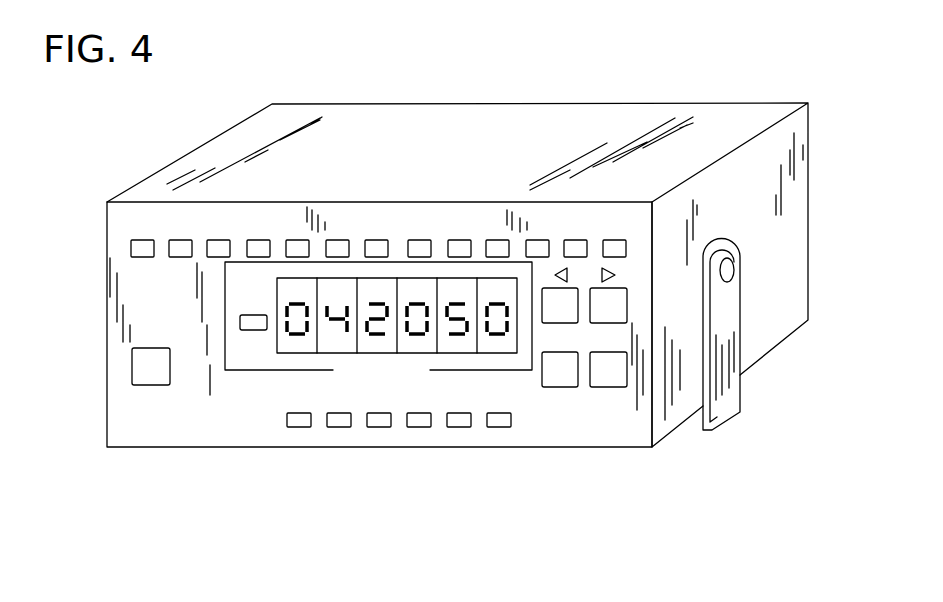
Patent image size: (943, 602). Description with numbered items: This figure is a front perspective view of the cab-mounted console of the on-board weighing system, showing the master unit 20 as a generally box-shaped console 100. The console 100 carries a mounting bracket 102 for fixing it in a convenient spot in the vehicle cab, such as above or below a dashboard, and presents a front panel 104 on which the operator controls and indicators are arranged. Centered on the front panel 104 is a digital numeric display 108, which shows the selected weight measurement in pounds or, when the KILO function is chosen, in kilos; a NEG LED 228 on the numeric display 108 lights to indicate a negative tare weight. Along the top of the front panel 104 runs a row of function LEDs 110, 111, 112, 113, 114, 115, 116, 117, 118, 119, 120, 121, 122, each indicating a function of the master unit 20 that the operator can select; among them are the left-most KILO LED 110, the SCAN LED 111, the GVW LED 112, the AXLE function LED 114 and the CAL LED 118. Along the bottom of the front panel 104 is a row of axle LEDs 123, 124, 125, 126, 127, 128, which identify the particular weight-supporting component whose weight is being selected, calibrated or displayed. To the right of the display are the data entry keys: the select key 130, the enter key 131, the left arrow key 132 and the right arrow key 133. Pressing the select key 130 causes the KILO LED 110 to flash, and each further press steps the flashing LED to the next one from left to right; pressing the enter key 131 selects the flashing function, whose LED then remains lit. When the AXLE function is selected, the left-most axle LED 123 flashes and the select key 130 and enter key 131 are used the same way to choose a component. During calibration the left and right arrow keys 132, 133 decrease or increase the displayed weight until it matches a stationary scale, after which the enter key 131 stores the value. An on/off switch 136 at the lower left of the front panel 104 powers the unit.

The master unit 20 is at (74, 293).
The console 100 is at (767, 358).
The mounting bracket 102 is at (727, 417).
The front panel 104 is at (157, 447).
The digital numeric display 108 is at (225, 370).
The KILO LED 110 is at (131, 246).
The SCAN LED 111 is at (178, 239).
The GVW LED 112 is at (217, 239).
The function LED 113 is at (257, 240).
The AXLE function LED 114 is at (296, 240).
The function LED 115 is at (338, 240).
The function LED 116 is at (375, 240).
The function LED 117 is at (415, 240).
The CAL LED 118 is at (457, 240).
The function LED 119 is at (497, 240).
The function LED 120 is at (535, 240).
The function LED 121 is at (575, 240).
The function LED 122 is at (613, 241).
The axle LED 123 is at (298, 427).
The axle LED 124 is at (337, 427).
The axle LED 125 is at (377, 427).
The axle LED 126 is at (417, 427).
The axle LED 127 is at (458, 427).
The axle LED 128 is at (497, 427).
The select key 130 is at (557, 387).
The enter key 131 is at (627, 367).
The left arrow key 132 is at (572, 288).
The right arrow key 133 is at (627, 308).
The on/off switch 136 is at (132, 365).
The NEG LED 228 is at (240, 322).